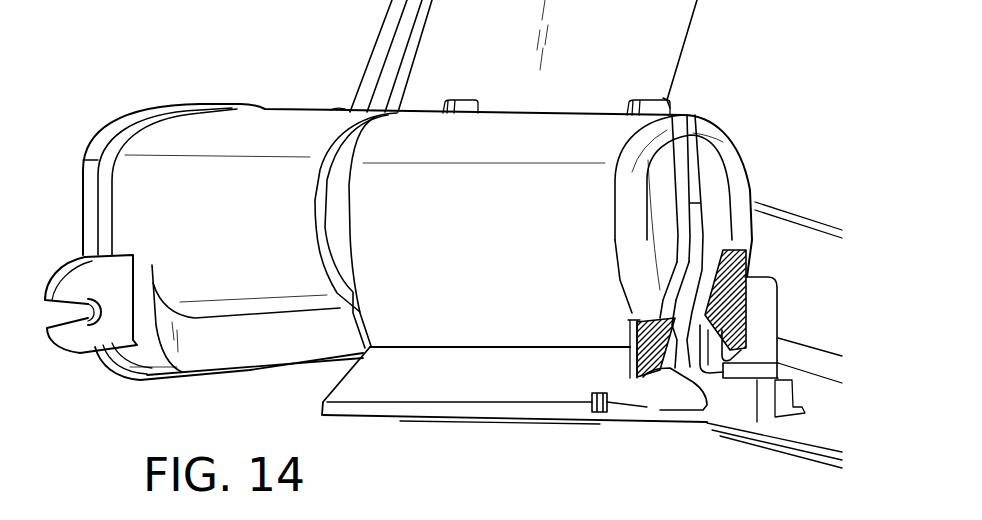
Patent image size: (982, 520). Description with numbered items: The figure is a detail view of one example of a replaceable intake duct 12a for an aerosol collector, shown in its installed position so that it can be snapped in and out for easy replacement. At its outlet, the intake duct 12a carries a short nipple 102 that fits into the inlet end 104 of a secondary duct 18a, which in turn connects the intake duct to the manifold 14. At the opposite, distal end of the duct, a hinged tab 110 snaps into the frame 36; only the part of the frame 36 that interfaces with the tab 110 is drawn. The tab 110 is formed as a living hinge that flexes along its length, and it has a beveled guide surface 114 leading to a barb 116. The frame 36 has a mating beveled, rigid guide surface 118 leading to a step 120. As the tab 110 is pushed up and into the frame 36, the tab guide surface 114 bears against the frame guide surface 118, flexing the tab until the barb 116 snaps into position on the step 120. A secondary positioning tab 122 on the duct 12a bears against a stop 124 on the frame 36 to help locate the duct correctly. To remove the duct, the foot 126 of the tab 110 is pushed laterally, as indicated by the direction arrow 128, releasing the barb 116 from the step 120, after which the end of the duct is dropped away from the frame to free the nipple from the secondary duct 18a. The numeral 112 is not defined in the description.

The intake duct 12a is at (592, 125).
The manifold 14 is at (663, 22).
The secondary duct 18a is at (265, 122).
The frame 36 is at (745, 272).
The nipple 102 is at (333, 248).
The inlet end 104 is at (320, 197).
The hinged tab 110 is at (678, 227).
The inner ring 112 is at (722, 175).
The beveled guide surface 114 is at (677, 282).
The barb 116 is at (663, 307).
The rigid guide surface 118 is at (687, 380).
The step 120 is at (660, 315).
The secondary positioning tab 122 is at (720, 340).
The stop 124 is at (721, 368).
The foot 126 is at (625, 403).
The direction arrow 128 is at (583, 399).